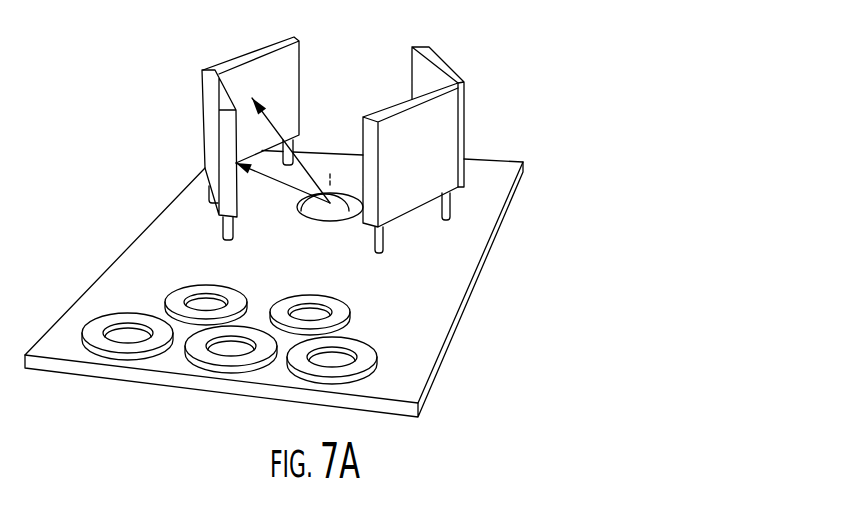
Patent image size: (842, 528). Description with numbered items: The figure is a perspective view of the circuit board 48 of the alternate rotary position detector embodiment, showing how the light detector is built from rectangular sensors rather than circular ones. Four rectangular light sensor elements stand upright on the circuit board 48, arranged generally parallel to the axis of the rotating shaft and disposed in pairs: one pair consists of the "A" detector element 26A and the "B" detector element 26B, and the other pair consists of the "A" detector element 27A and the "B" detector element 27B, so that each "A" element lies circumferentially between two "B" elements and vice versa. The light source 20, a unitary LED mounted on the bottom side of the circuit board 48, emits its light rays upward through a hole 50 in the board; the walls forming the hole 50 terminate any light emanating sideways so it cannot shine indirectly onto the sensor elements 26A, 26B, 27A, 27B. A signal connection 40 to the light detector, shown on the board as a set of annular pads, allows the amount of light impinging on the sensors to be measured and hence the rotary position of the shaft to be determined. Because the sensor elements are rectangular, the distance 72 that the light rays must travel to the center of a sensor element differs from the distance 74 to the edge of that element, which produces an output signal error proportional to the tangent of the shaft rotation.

The light source 20 is at (327, 226).
The "A" detector element 26A is at (440, 67).
The "B" detector element 26B is at (428, 180).
The "A" detector element 27A is at (210, 142).
The "B" detector element 27B is at (245, 55).
The signal connection 40 is at (277, 370).
The circuit board 48 is at (425, 338).
The hole 50 is at (347, 192).
The distance 72 is at (304, 167).
The distance 74 is at (278, 185).